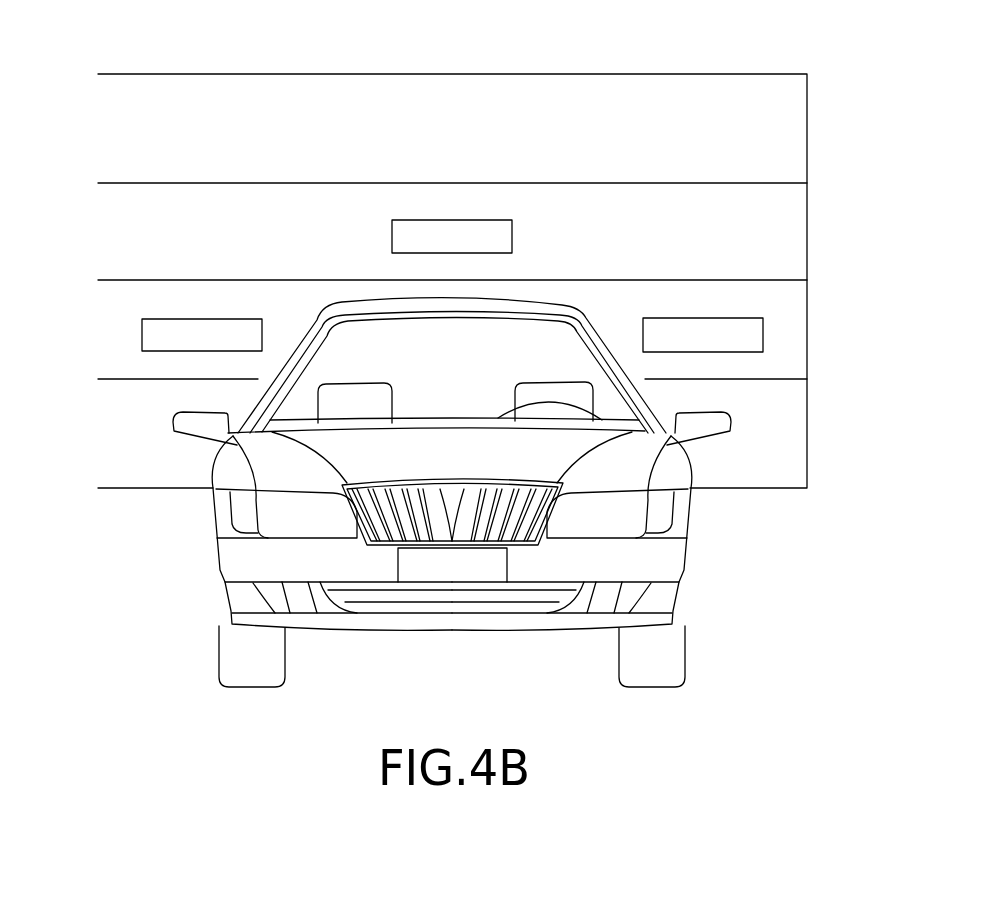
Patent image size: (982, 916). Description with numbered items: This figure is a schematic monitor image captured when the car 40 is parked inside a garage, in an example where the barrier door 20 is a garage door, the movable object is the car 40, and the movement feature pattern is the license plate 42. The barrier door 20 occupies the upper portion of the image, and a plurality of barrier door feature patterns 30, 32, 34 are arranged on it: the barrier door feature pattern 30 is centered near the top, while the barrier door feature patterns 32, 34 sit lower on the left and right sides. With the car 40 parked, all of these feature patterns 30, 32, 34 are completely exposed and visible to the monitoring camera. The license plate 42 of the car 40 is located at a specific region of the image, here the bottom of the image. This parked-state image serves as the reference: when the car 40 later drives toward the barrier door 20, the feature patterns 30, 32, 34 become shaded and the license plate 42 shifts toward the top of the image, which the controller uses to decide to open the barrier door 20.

The barrier door 20 is at (559, 80).
The barrier door feature pattern 30 is at (502, 237).
The barrier door feature pattern 32 is at (153, 334).
The barrier door feature pattern 34 is at (753, 334).
The car 40 is at (486, 495).
The license plate 42 is at (457, 563).